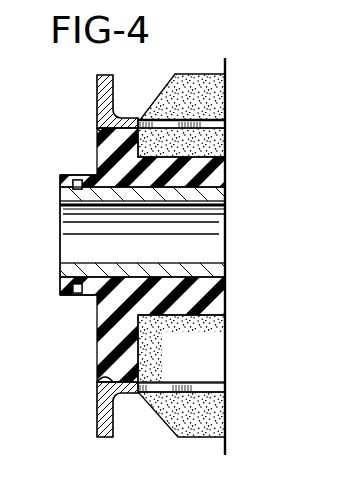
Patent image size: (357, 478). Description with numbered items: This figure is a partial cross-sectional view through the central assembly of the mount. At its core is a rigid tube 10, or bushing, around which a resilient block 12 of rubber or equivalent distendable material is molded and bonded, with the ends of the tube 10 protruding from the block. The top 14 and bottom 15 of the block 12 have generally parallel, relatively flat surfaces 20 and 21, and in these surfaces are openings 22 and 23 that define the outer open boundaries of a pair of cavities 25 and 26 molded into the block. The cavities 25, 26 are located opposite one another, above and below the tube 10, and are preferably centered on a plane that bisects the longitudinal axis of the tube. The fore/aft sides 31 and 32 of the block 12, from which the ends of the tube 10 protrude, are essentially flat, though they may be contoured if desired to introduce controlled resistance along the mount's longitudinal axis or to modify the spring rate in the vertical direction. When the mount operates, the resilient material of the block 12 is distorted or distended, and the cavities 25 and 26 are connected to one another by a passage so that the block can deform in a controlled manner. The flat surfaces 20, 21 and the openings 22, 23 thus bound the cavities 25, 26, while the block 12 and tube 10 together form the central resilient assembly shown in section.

The tube 10 is at (63, 191).
The resilient block 12 is at (216, 181).
The top of the block 14 is at (98, 150).
The bottom of the block 15 is at (110, 363).
The flat surface 20 is at (98, 133).
The flat surface 21 is at (100, 390).
The opening 22 is at (110, 156).
The opening 23 is at (143, 360).
The cavity 25 is at (210, 146).
The cavity 26 is at (215, 333).
The fore/aft side 31 is at (98, 310).
The fore/aft side 32 is at (98, 137).